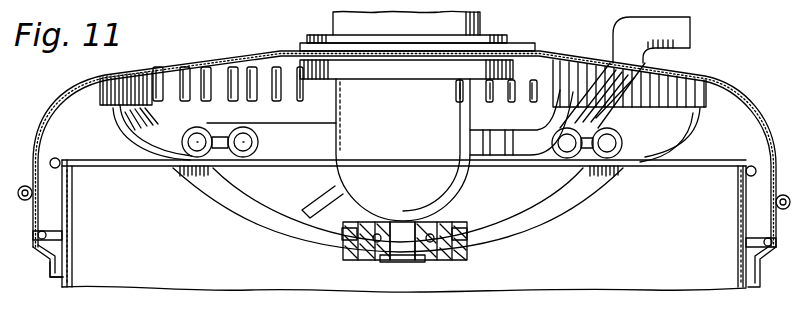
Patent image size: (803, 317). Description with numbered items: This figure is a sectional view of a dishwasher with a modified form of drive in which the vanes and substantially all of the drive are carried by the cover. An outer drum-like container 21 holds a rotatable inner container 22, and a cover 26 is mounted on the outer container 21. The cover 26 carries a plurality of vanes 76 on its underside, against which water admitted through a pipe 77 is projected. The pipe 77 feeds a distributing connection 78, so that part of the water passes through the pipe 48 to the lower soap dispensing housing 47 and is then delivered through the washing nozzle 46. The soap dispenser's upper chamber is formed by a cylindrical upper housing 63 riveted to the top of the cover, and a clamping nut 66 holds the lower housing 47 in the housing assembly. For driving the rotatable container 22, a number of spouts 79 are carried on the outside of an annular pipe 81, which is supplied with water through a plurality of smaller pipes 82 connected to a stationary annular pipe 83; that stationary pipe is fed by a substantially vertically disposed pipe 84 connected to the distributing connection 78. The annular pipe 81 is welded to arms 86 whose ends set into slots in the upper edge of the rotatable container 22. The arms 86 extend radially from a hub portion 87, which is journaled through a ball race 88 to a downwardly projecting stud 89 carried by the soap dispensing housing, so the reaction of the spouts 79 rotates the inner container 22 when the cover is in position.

The outer drum-like container 21 is at (48, 264).
The inner container 22 is at (66, 222).
The cover 26 is at (212, 56).
The washing nozzle 46 is at (322, 206).
The lower soap dispensing housing 47 is at (467, 190).
The pipe 48 is at (518, 160).
The upper housing 63 is at (484, 34).
The clamping nut 66 is at (432, 72).
The vanes 76 is at (256, 99).
The pipe 77 is at (688, 28).
The distributing connection 78 is at (576, 68).
The spouts 79 is at (128, 122).
The annular pipe 81 is at (204, 130).
The smaller pipes 82 is at (226, 162).
The stationary annular pipe 83 is at (262, 143).
The vertically disposed pipe 84 is at (590, 117).
The arms 86 is at (133, 163).
The hub portion 87 is at (456, 257).
The ball race 88 is at (370, 256).
The stud 89 is at (408, 242).